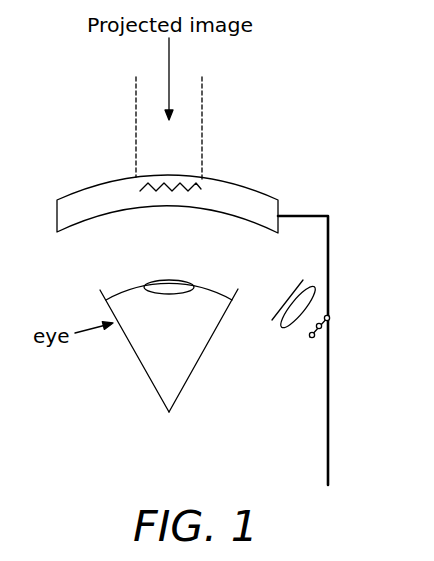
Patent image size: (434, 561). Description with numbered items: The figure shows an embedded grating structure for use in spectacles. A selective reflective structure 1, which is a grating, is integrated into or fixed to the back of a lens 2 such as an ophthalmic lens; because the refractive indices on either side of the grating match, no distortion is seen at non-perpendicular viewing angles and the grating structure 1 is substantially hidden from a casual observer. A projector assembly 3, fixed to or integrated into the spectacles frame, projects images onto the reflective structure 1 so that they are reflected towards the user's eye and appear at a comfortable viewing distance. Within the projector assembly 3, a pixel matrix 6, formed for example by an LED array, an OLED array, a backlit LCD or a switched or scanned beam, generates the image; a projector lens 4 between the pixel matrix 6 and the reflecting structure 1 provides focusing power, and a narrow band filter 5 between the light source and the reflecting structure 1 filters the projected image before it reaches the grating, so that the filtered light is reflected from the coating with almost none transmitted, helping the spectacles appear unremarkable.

The selective reflective structure 1 is at (219, 150).
The lens 2 is at (92, 186).
The projector assembly 3 is at (277, 356).
The projector lens 4 is at (318, 277).
The narrow band filter 5 is at (314, 229).
The pixel matrix 6 is at (311, 350).